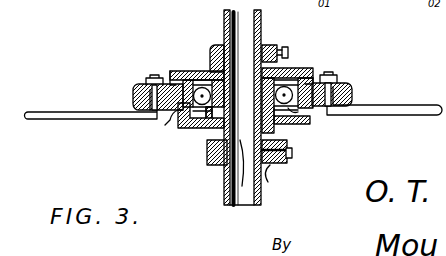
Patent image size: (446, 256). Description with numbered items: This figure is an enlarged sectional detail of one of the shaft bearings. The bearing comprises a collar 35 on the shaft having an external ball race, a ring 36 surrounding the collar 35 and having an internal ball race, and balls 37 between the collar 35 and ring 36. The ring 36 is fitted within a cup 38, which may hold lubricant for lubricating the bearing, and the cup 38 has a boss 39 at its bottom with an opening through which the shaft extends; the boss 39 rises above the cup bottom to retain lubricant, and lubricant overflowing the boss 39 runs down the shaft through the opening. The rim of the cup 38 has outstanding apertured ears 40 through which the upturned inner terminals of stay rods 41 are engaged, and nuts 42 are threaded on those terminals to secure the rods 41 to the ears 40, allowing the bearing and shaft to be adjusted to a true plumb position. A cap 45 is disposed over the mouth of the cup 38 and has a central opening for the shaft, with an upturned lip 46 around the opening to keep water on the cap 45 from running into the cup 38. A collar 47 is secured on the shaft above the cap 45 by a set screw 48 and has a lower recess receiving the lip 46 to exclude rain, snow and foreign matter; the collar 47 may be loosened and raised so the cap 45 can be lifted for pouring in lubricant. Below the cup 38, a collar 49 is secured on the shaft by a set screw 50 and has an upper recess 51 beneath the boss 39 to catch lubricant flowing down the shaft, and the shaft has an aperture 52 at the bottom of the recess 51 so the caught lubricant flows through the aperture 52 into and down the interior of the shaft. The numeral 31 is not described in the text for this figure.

The tubular shaft 31 is at (224, 15).
The collar 35 is at (206, 120).
The ring 36 is at (292, 118).
The balls 37 is at (288, 142).
The cup 38 is at (172, 124).
The boss 39 is at (220, 127).
The ears 40 is at (352, 88).
The stay rods 41 is at (70, 113).
The nuts 42 is at (337, 76).
The cap 45 is at (290, 68).
The lip 46 is at (210, 62).
The collar 47 is at (270, 45).
The set screw 48 is at (287, 47).
The collar 49 is at (270, 166).
The set screw 50 is at (292, 156).
The recess 51 is at (216, 166).
The aperture 52 is at (243, 205).